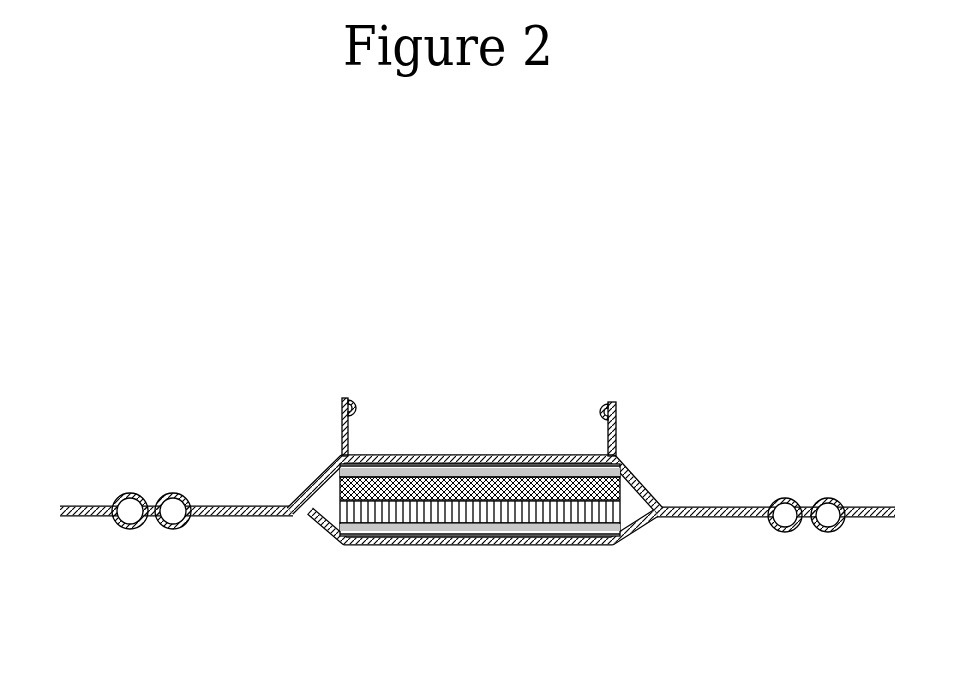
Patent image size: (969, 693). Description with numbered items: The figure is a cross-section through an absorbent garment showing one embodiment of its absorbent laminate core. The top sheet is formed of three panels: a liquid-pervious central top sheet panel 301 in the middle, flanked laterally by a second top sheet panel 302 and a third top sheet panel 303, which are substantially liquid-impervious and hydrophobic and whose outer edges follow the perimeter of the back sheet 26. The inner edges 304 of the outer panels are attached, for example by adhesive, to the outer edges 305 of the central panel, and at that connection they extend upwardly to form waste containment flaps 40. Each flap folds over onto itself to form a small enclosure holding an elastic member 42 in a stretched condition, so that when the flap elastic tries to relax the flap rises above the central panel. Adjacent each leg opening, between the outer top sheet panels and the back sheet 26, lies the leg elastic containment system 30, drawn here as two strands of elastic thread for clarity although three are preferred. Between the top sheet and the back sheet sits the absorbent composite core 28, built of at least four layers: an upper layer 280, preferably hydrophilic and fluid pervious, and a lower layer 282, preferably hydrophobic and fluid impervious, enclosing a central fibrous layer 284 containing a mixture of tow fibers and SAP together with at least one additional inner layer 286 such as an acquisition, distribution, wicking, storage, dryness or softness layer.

The back sheet 26 is at (391, 549).
The absorbent composite core 28 is at (630, 485).
The leg elastic containment system 30 is at (827, 523).
The waste containment flap 40 is at (619, 417).
The elastic member 42 is at (602, 410).
The upper layer 280 is at (478, 467).
The lower layer 282 is at (548, 532).
The central fibrous layer 284 is at (612, 493).
The additional inner layer 286 is at (344, 513).
The central top sheet panel 301 is at (402, 451).
The second top sheet panel 302 is at (217, 502).
The third top sheet panel 303 is at (719, 504).
The inner edges 304 is at (327, 484).
The outer edges 305 is at (603, 456).